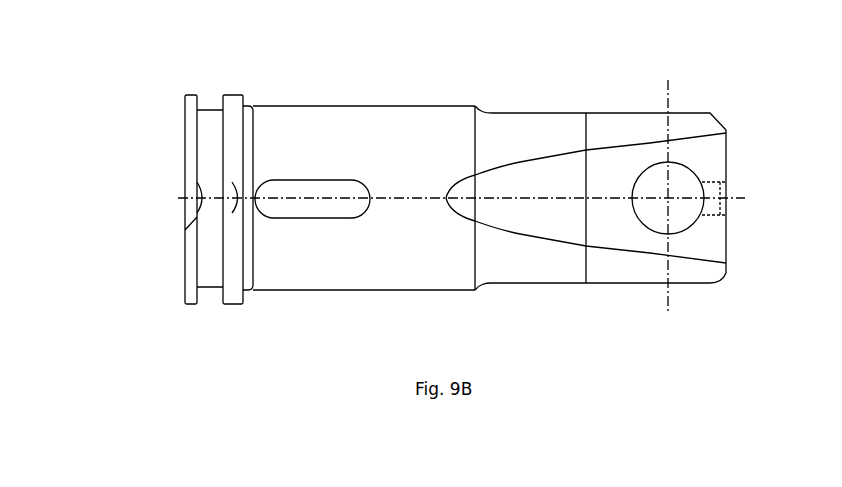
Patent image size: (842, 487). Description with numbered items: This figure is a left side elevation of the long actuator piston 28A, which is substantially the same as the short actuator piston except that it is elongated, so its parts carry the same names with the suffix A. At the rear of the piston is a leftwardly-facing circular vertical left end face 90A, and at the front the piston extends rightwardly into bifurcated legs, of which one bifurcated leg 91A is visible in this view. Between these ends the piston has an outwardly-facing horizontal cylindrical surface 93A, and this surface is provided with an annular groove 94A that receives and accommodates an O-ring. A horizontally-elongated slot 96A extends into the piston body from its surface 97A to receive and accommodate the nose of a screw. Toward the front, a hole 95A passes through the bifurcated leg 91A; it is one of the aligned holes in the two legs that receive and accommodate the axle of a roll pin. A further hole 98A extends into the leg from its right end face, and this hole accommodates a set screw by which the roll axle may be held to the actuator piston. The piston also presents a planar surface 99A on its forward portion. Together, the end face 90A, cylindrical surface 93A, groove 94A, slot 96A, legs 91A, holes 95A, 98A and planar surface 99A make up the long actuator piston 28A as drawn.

The long actuator piston 28A is at (440, 75).
The left end face 90A is at (183, 256).
The bifurcated leg 91A is at (712, 272).
The cylindrical surface 93A is at (228, 92).
The annular groove 94A is at (206, 295).
The hole 95A is at (655, 175).
The slot 96A is at (308, 212).
The surface 97A is at (373, 125).
The hole 98A is at (728, 188).
The planar surface 99A is at (545, 215).